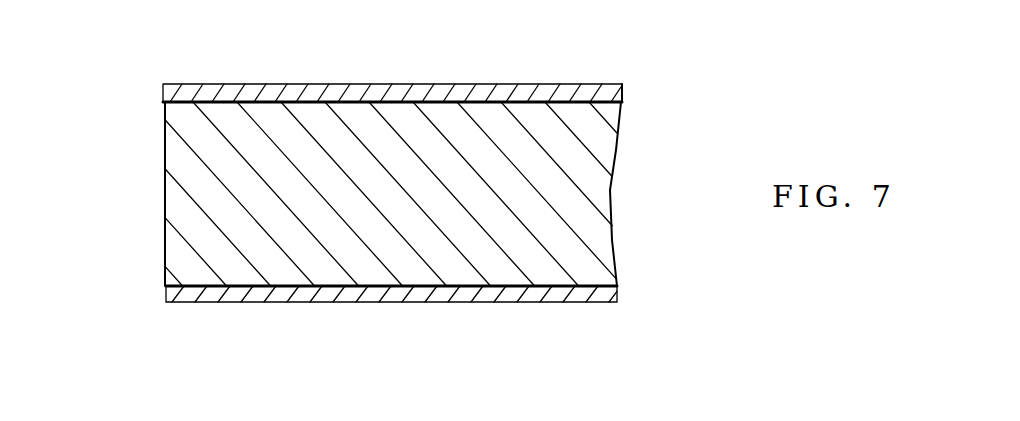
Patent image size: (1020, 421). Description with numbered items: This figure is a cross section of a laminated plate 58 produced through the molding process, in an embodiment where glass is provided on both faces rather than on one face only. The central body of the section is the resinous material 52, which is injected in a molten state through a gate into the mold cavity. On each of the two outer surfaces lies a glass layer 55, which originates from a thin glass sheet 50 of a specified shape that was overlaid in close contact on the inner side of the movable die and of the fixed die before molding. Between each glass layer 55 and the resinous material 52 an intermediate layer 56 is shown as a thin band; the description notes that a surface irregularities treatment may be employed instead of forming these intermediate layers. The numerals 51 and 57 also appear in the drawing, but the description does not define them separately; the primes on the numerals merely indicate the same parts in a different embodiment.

The glass layer 55 is at (392, 191).
The thin glass sheet 50 is at (280, 86).
The intermediate layer 56 is at (414, 192).
The interface / adhesive layer (51', 51'') 51 is at (519, 91).
The core body layer (57'') 57 is at (335, 194).
The molten resinous material 52 is at (178, 142).
The laminated plate 58 is at (634, 99).